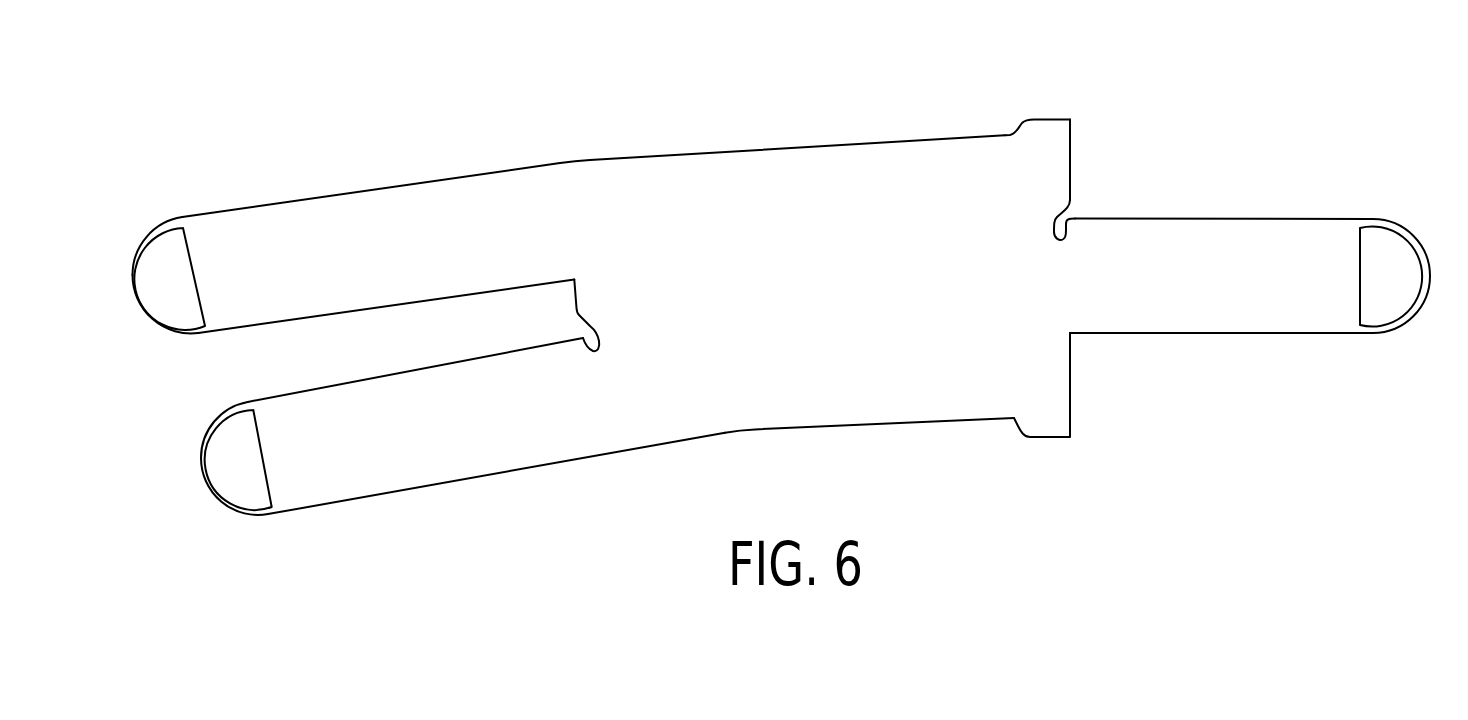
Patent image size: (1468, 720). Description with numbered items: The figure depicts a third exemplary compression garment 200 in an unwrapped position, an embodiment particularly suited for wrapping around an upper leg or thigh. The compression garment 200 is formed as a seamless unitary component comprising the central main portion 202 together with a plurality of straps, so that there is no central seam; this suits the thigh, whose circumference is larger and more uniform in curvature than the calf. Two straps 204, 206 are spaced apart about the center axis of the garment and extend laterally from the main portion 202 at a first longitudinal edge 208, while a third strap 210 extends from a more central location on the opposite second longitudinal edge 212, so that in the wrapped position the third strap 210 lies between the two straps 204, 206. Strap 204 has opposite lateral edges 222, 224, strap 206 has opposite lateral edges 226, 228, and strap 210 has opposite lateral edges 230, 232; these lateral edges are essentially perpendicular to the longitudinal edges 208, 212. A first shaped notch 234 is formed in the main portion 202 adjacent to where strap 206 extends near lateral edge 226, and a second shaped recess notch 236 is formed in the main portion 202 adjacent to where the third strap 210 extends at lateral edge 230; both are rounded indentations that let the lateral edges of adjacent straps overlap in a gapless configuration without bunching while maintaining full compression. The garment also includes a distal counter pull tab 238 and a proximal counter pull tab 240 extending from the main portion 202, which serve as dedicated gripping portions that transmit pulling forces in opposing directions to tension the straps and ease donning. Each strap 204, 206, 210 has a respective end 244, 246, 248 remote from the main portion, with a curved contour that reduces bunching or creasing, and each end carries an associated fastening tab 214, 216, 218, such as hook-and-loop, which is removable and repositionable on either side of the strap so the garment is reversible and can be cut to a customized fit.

The compression garment 200 is at (863, 97).
The central main portion 202 is at (773, 197).
The strap 204 is at (268, 228).
The strap 206 is at (353, 482).
The first longitudinal edge 208 is at (573, 290).
The third strap 210 is at (1246, 218).
The second longitudinal edge 212 is at (1073, 147).
The fastening tab 214 is at (172, 225).
The fastening tab 216 is at (243, 487).
The fastening tab 218 is at (1395, 247).
The lateral edge 222 is at (373, 190).
The lateral edge 224 is at (349, 318).
The lateral edge 226 is at (419, 367).
The lateral edge 228 is at (465, 482).
The lateral edge 230 is at (1163, 218).
The lateral edge 232 is at (1162, 335).
The first shaped notch 234 is at (600, 333).
The second shaped recess notch 236 is at (1047, 213).
The distal counter pull tab 238 is at (1052, 118).
The proximal counter pull tab 240 is at (1045, 438).
The end 244 is at (133, 290).
The end 246 is at (202, 470).
The end 248 is at (1420, 310).